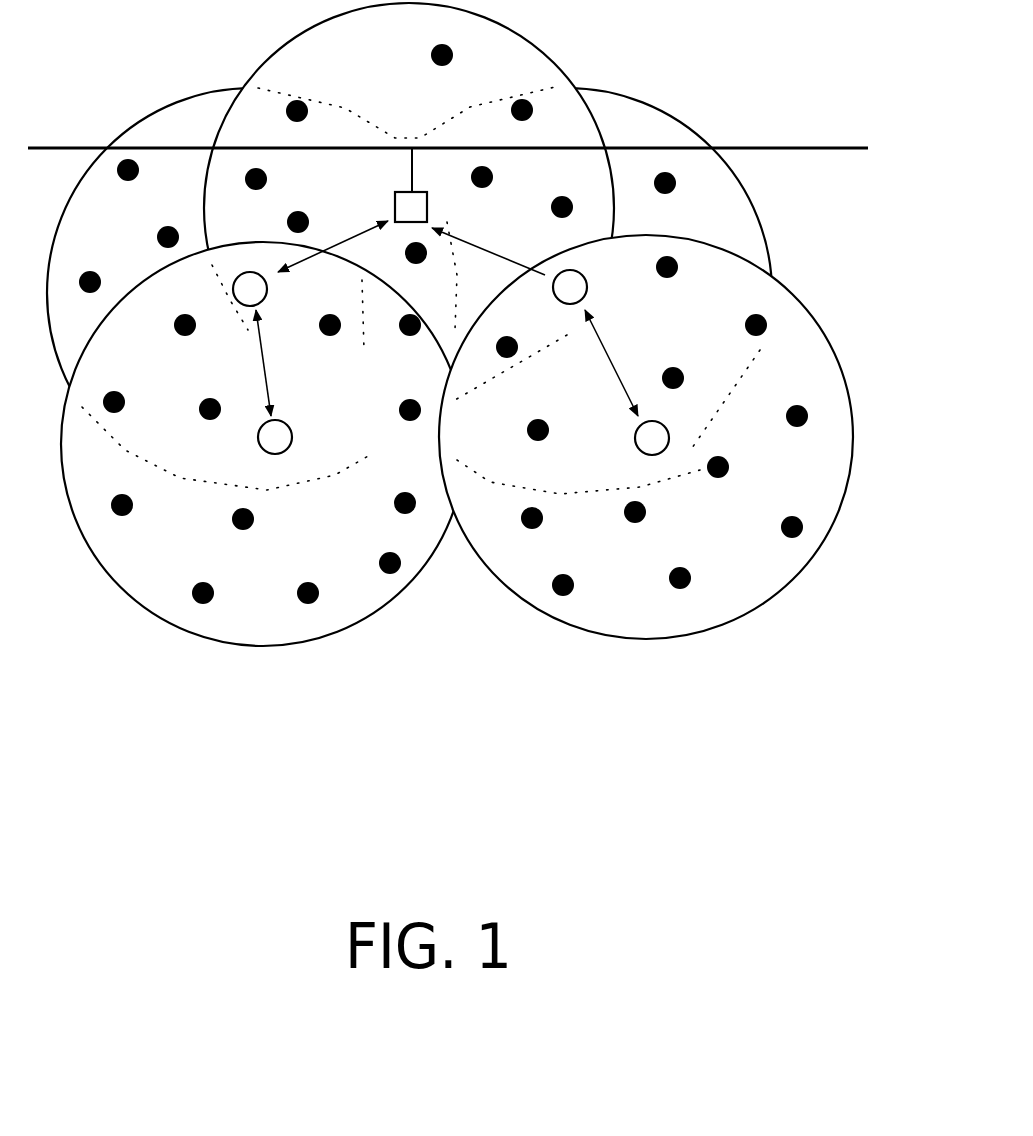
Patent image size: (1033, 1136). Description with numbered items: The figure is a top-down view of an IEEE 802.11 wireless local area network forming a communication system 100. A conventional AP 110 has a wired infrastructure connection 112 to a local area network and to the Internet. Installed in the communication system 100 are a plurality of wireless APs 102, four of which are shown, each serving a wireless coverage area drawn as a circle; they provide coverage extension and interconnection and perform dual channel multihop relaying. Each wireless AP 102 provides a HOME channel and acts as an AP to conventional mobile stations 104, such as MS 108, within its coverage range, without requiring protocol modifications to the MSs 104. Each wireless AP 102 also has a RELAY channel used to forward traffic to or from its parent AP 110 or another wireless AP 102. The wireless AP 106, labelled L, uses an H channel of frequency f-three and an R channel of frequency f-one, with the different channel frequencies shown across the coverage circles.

The communication system 100 is at (470, 370).
The wireless access points 102 is at (637, 293).
The mobile stations 104 is at (226, 603).
The wireless access point 106 is at (284, 452).
The mobile station 108 is at (192, 593).
The conventional access point 110 is at (427, 200).
The wired infrastructure connection 112 is at (757, 148).